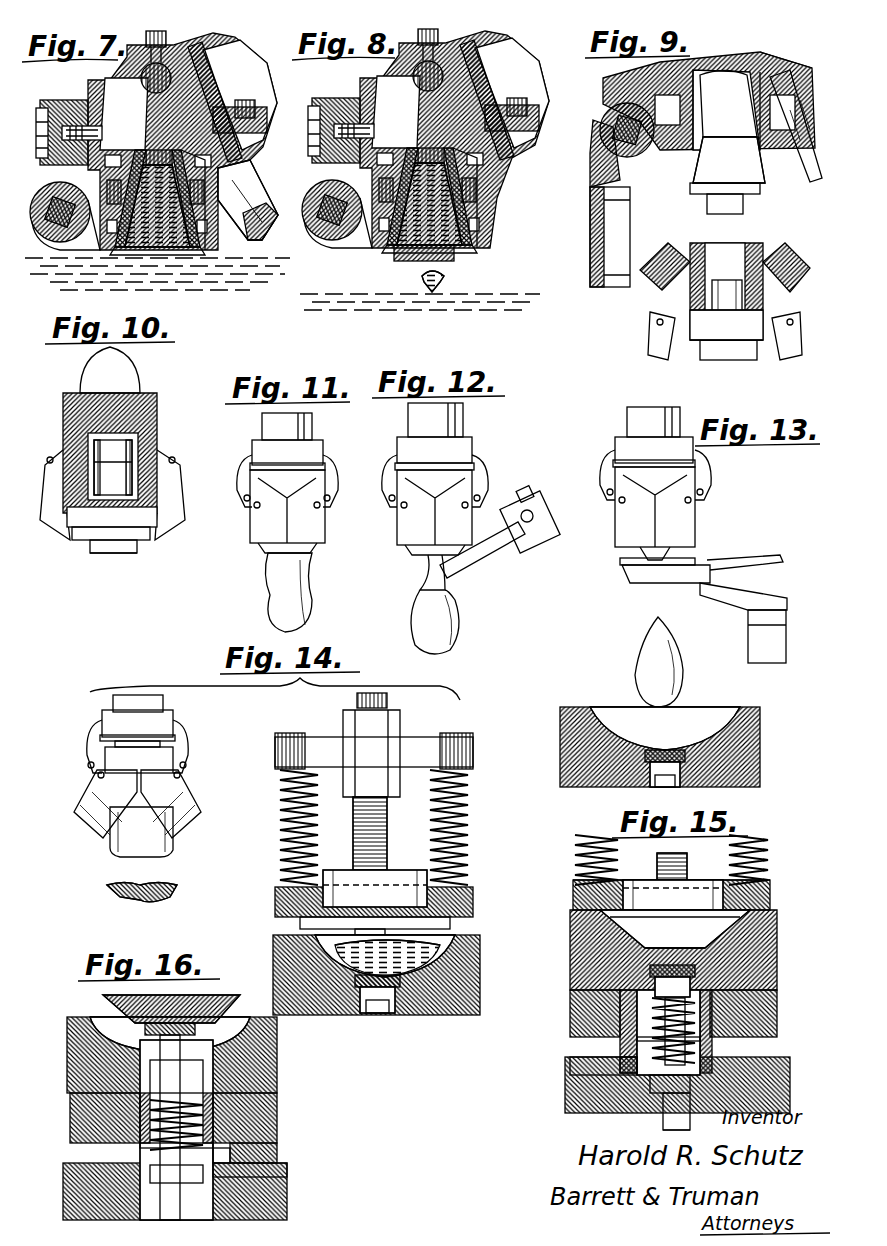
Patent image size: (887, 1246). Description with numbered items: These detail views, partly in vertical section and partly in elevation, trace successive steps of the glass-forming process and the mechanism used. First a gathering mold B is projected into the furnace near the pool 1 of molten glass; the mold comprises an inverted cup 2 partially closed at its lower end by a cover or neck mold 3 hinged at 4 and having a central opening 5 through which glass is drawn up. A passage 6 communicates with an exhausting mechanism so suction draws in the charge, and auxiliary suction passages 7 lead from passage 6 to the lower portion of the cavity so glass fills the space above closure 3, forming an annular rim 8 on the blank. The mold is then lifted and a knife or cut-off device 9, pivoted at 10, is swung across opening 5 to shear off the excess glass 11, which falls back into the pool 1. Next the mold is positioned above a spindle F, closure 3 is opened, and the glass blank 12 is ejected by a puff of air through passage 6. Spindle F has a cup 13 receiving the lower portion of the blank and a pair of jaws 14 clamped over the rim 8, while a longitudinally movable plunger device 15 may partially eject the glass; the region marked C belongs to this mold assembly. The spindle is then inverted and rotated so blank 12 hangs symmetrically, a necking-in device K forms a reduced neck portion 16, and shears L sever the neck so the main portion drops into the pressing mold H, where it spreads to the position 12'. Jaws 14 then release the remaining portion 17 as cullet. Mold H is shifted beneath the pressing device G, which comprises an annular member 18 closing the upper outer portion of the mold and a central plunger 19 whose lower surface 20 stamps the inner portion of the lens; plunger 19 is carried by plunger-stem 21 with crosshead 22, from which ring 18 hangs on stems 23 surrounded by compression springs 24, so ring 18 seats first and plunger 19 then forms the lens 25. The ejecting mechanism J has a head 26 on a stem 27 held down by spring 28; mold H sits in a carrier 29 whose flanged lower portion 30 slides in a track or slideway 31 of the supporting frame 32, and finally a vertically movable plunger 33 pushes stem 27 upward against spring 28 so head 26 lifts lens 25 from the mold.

In FIG. 7, the pool of molten glass 1 is at (82, 262).
In FIG. 8, the pool of molten glass 1 is at (420, 291).
In FIG. 7, the inverted cup 2 is at (195, 178).
In FIG. 8, the inverted cup 2 is at (485, 198).
In FIG. 9, the inverted cup 2 is at (700, 150).
In FIG. 7, the cover or neck mold 3 is at (125, 222).
In FIG. 8, the cover or neck mold 3 is at (448, 202).
In FIG. 9, the cover or neck mold 3 is at (600, 264).
In FIG. 7, the hinge 4 is at (48, 200).
In FIG. 8, the hinge 4 is at (432, 213).
In FIG. 9, the hinge 4 is at (606, 140).
In FIG. 7, the central opening 5 is at (178, 225).
In FIG. 8, the central opening 5 is at (416, 215).
In FIG. 9, the central opening 5 is at (596, 224).
In FIG. 7, the passage 6 is at (236, 60).
In FIG. 8, the passage 6 is at (507, 97).
In FIG. 7, the auxiliary suction passages 7 is at (136, 60).
In FIG. 8, the auxiliary suction passages 7 is at (454, 139).
In FIG. 9, the auxiliary suction passages 7 is at (772, 86).
In FIG. 7, the annular rim 8 is at (188, 230).
In FIG. 8, the annular rim 8 is at (429, 264).
In FIG. 9, the annular rim 8 is at (700, 190).
In FIG. 7, the knife or cut-off device 9 is at (252, 228).
In FIG. 8, the knife or cut-off device 9 is at (418, 263).
In FIG. 9, the knife or cut-off device 9 is at (816, 184).
In FIG. 7, the pivot 10 is at (166, 40).
In FIG. 8, the pivot 10 is at (440, 57).
In FIG. 8, the excess glass 11 is at (447, 285).
In FIG. 7, the glass blank 12 is at (141, 227).
In FIG. 8, the glass blank 12 is at (399, 208).
In FIG. 9, the glass blank 12 is at (720, 148).
In FIG. 10, the glass blank 12 is at (131, 370).
In FIG. 11, the glass blank 12 is at (274, 592).
In FIG. 12, the glass blank 12 is at (459, 622).
In FIG. 13, the glass blank 12 is at (639, 662).
In FIG. 14, the spread-out molten blank 12' is at (366, 980).
In FIG. 9, the cup 13 is at (762, 252).
In FIG. 10, the cup 13 is at (150, 402).
In FIG. 14, the cup 13 is at (166, 848).
In FIG. 9, the jaws 14 is at (674, 262).
In FIG. 10, the jaws 14 is at (68, 418).
In FIG. 11, the jaws 14 is at (252, 530).
In FIG. 12, the jaws 14 is at (402, 535).
In FIG. 13, the jaws 14 is at (618, 525).
In FIG. 14, the jaws 14 is at (82, 800).
In FIG. 9, the plunger device 15 is at (730, 280).
In FIG. 10, the plunger device 15 is at (160, 440).
In FIG. 12, the reduced neck portion 16 is at (426, 565).
In FIG. 14, the remaining portion of glass blank 17 is at (120, 884).
In FIG. 14, the annular member 18 is at (278, 905).
In FIG. 15, the annular member 18 is at (772, 889).
In FIG. 14, the central plunger 19 is at (386, 876).
In FIG. 15, the central plunger 19 is at (701, 880).
In FIG. 14, the lower surface of plunger 20 is at (305, 923).
In FIG. 15, the lower surface of plunger 20 is at (640, 940).
In FIG. 14, the plunger-stem 21 is at (376, 830).
In FIG. 15, the plunger-stem 21 is at (658, 862).
In FIG. 14, the crosshead 22 is at (400, 735).
In FIG. 14, the stems 23 is at (286, 832).
In FIG. 15, the stems 23 is at (580, 838).
In FIG. 14, the compression springs 24 is at (284, 810).
In FIG. 15, the compression springs 24 is at (578, 872).
In FIG. 15, the lens 25 is at (780, 922).
In FIG. 16, the lens 25 is at (216, 996).
In FIG. 13, the head 26 is at (672, 750).
In FIG. 14, the head 26 is at (366, 989).
In FIG. 15, the head 26 is at (660, 976).
In FIG. 16, the head 26 is at (212, 1020).
In FIG. 13, the stem 27 is at (660, 780).
In FIG. 14, the stem 27 is at (382, 1006).
In FIG. 15, the stem 27 is at (660, 996).
In FIG. 16, the stem 27 is at (213, 1080).
In FIG. 15, the spring 28 is at (650, 1020).
In FIG. 16, the spring 28 is at (214, 1100).
In FIG. 15, the carrier 29 is at (638, 1042).
In FIG. 16, the carrier 29 is at (215, 1130).
In FIG. 15, the flanged lower portion 30 is at (616, 1062).
In FIG. 16, the flanged lower portion 30 is at (266, 1164).
In FIG. 15, the track or slideway 31 is at (660, 1090).
In FIG. 16, the track or slideway 31 is at (216, 1180).
In FIG. 15, the supporting frame 32 is at (572, 1084).
In FIG. 16, the supporting frame 32 is at (246, 1170).
In FIG. 15, the vertically movable plunger 33 is at (664, 1120).
In FIG. 16, the vertically movable plunger 33 is at (196, 1190).
In FIG. 7, the gathering mold B is at (80, 83).
In FIG. 8, the gathering mold B is at (341, 118).
In FIG. 9, the gathering mold B is at (776, 68).
In FIG. 7, the chamber C is at (252, 68).
In FIG. 8, the chamber C is at (526, 93).
In FIG. 9, the spindle F is at (706, 360).
In FIG. 10, the spindle F is at (106, 555).
In FIG. 11, the spindle F is at (256, 421).
In FIG. 12, the spindle F is at (465, 420).
In FIG. 13, the spindle F is at (621, 421).
In FIG. 14, the spindle F is at (106, 708).
In FIG. 14, the pressing device G is at (442, 735).
In FIG. 15, the pressing device G is at (766, 846).
In FIG. 13, the pressing mold H is at (762, 756).
In FIG. 14, the pressing mold H is at (480, 960).
In FIG. 15, the pressing mold H is at (787, 964).
In FIG. 16, the pressing mold H is at (61, 1058).
In FIG. 15, the ejecting mechanism J is at (654, 1123).
In FIG. 12, the necking-in device K is at (535, 556).
In FIG. 13, the shears L is at (731, 560).